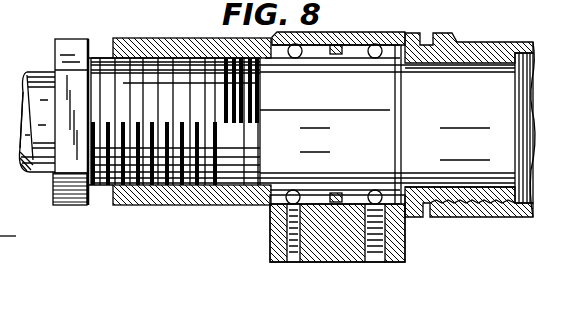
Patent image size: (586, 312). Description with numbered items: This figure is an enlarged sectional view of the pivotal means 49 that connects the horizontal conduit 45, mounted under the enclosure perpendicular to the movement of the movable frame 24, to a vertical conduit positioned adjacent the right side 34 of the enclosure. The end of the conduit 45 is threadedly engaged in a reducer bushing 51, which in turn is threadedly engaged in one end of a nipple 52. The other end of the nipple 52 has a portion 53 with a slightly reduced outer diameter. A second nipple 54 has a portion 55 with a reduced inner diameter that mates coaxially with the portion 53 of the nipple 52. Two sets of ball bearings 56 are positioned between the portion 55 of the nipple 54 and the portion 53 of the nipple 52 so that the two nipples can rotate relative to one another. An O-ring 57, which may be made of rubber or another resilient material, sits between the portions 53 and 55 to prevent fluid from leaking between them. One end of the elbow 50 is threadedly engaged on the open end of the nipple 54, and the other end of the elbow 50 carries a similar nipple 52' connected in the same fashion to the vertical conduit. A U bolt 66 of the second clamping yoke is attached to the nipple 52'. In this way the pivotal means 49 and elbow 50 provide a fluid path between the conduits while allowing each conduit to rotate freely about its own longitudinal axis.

The movable frame 24 is at (3, 42).
The right side 34 is at (20, 240).
The conduit 45 is at (34, 173).
The pivotal means 49 is at (180, 223).
The elbow 50 is at (504, 40).
The reducer bushing 51 is at (143, 186).
The nipple 52 is at (179, 107).
The nipple 52' is at (45, 122).
The portion with reduced outer diameter 53 is at (401, 141).
The second nipple 54 is at (405, 33).
The portion with reduced inner diameter 55 is at (507, 100).
The ball bearings 56 is at (290, 82).
The O-ring 57 is at (337, 55).
The U bolt 66 is at (11, 120).